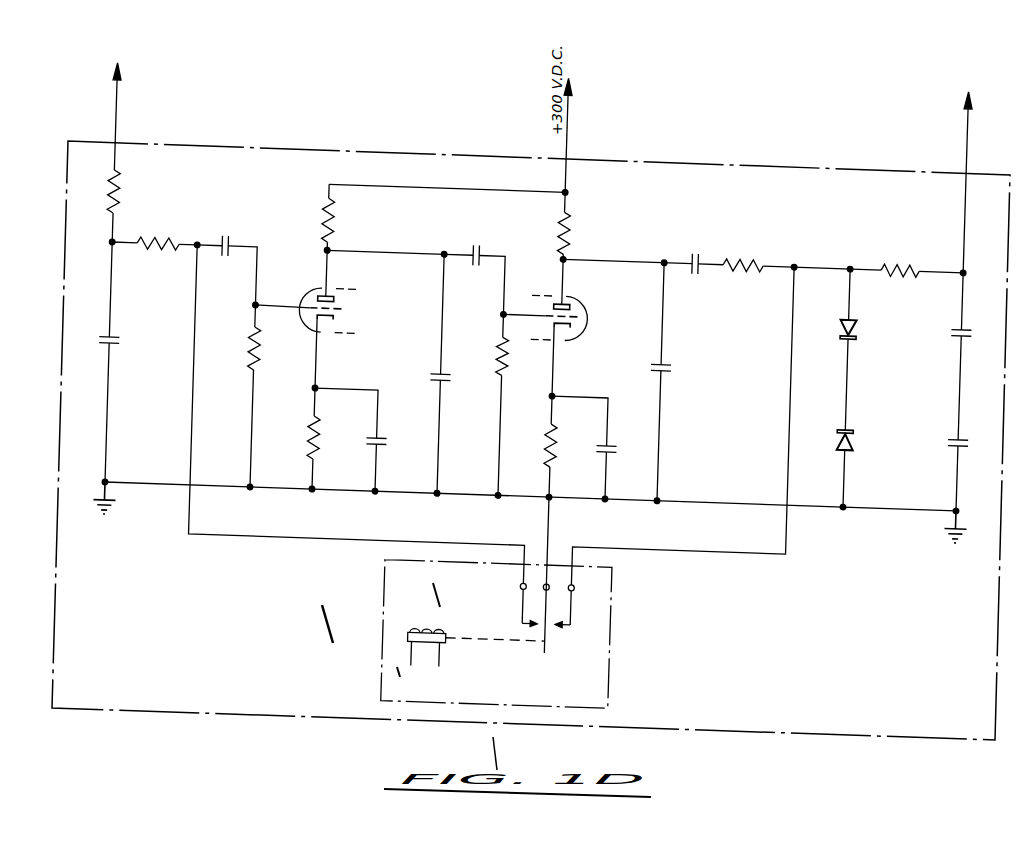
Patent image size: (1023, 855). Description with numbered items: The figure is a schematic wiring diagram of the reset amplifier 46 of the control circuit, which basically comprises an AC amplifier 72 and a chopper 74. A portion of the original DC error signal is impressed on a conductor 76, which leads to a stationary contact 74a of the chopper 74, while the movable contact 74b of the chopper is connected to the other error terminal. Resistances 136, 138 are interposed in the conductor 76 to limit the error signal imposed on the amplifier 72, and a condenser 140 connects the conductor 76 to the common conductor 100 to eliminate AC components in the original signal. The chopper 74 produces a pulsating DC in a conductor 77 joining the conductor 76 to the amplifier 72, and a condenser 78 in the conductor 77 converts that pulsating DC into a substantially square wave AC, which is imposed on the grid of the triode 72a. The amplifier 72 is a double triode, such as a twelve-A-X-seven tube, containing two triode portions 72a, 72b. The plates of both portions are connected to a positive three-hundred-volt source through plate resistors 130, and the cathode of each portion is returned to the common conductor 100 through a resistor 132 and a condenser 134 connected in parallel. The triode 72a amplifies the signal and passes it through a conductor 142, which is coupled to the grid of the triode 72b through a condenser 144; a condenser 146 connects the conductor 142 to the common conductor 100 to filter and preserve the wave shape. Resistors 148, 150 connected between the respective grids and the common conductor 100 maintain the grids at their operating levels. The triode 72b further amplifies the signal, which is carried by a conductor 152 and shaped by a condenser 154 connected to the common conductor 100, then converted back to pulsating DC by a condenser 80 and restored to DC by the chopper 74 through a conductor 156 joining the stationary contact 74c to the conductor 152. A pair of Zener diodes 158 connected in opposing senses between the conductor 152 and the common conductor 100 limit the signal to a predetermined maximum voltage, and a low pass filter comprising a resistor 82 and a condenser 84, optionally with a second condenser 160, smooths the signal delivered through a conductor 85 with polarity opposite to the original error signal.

The reset amplifier 46 is at (702, 161).
The conductor 76 is at (108, 99).
The resistance 136 is at (114, 191).
The resistance 138 is at (152, 215).
The condenser 140 is at (114, 339).
The conductor 77 is at (203, 241).
The condenser 78 is at (221, 239).
The resistor 148 is at (258, 345).
The plate resistor 130 is at (314, 215).
The AC amplifier 72 is at (433, 324).
The triode portion 72a is at (319, 284).
The triode portion 72b is at (568, 284).
The conductor 142 is at (363, 245).
The condenser 144 is at (470, 235).
The condenser 146 is at (431, 364).
The resistor 150 is at (489, 337).
The resistor 132 is at (319, 426).
The condenser 134 is at (387, 434).
The common conductor 100 is at (155, 480).
The conductor 152 is at (605, 240).
The condenser 80 is at (698, 230).
The condenser 154 is at (670, 349).
The conductor 156 is at (770, 532).
The Zener diode 158 is at (852, 304).
The resistor 82 is at (908, 235).
The conductor 85 is at (955, 181).
The condenser 84 is at (950, 305).
The second condenser 160 is at (939, 474).
The chopper 74 is at (512, 601).
The stationary contact 74a is at (521, 572).
The movable contact 74b is at (546, 576).
The stationary contact 74c is at (580, 570).